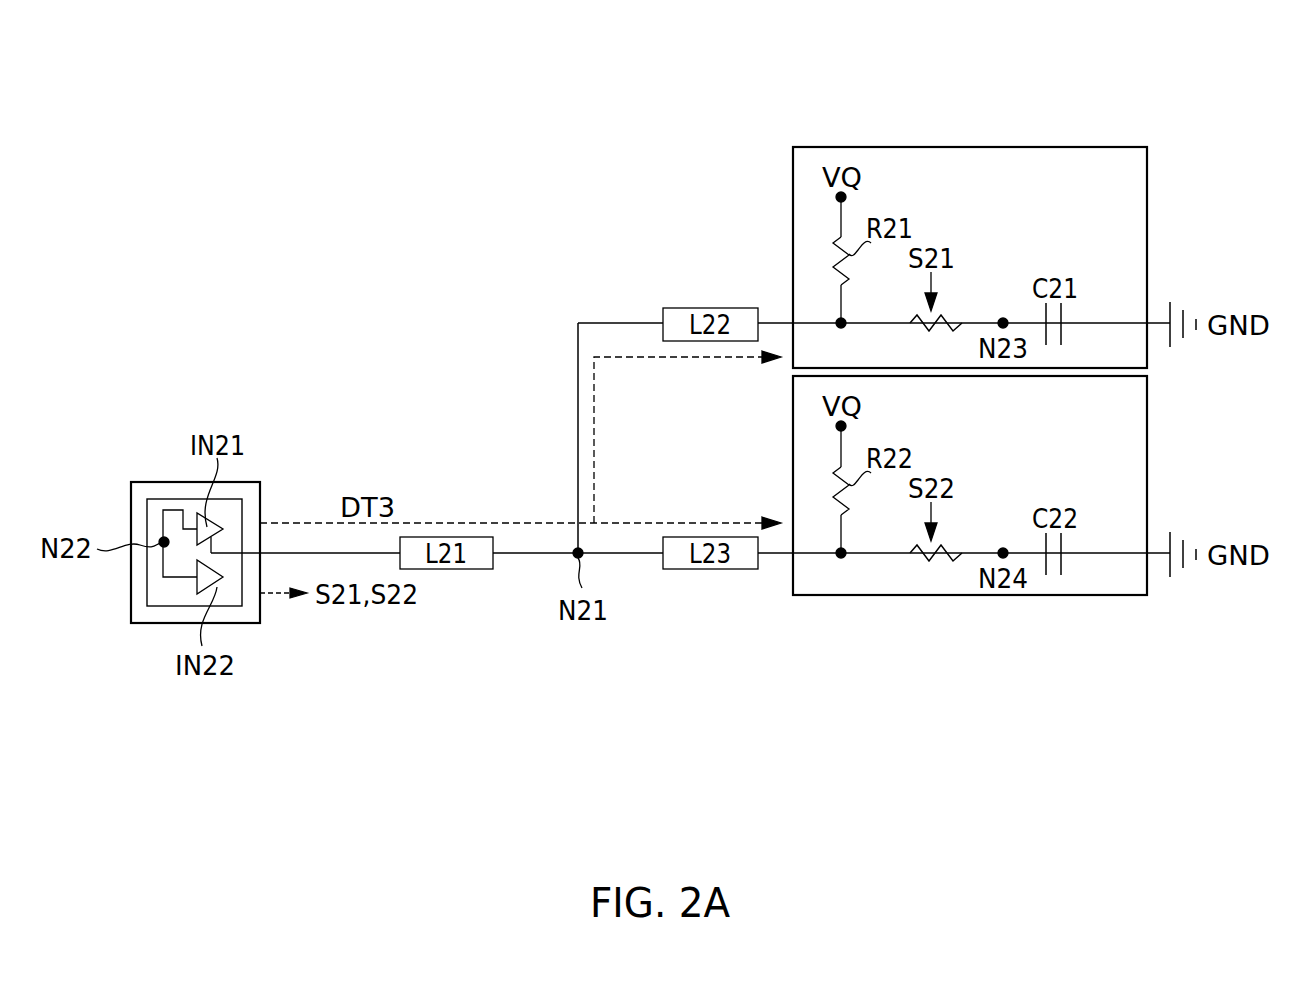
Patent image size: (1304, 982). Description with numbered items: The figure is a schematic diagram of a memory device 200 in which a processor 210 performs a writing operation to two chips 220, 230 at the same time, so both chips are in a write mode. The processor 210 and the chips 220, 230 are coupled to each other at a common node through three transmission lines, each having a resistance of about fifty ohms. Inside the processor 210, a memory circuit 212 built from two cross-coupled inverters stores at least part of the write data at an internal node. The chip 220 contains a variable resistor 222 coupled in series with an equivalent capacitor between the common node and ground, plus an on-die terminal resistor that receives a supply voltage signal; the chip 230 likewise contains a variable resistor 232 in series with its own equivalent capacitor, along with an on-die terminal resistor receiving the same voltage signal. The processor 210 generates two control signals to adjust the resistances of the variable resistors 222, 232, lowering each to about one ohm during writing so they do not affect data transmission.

The memory device 200 is at (1276, 33).
The processor 210 is at (131, 494).
The memory circuit 212 is at (147, 588).
The chip 220 is at (793, 194).
The variable resistor 222 is at (979, 297).
The chip 230 is at (793, 428).
The variable resistor 232 is at (979, 527).